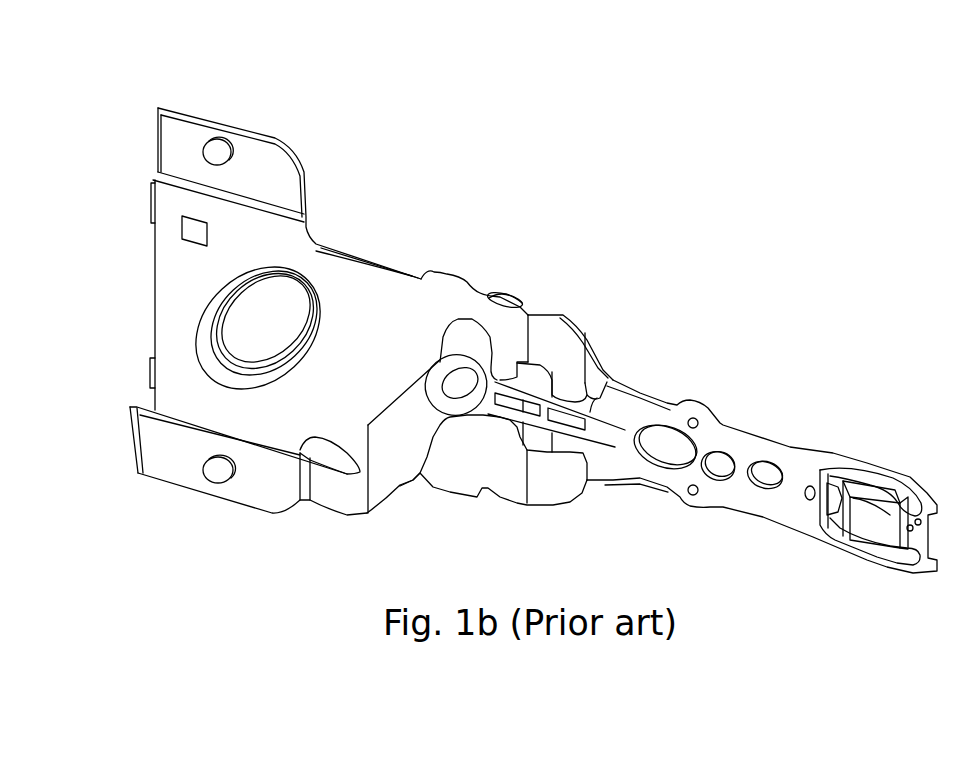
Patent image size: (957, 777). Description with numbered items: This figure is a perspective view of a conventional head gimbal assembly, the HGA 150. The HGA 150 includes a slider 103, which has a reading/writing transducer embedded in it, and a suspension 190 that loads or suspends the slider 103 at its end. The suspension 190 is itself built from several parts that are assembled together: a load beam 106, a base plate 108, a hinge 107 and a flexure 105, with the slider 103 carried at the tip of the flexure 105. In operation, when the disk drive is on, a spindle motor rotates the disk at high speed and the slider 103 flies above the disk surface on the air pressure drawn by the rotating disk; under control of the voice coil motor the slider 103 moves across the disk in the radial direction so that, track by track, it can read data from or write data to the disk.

The HGA 150 is at (71, 66).
The suspension 190 is at (750, 223).
The base plate 108 is at (503, 293).
The hinge 107 is at (542, 330).
The load beam 106 is at (593, 373).
The flexure 105 is at (727, 438).
The slider 103 is at (868, 525).